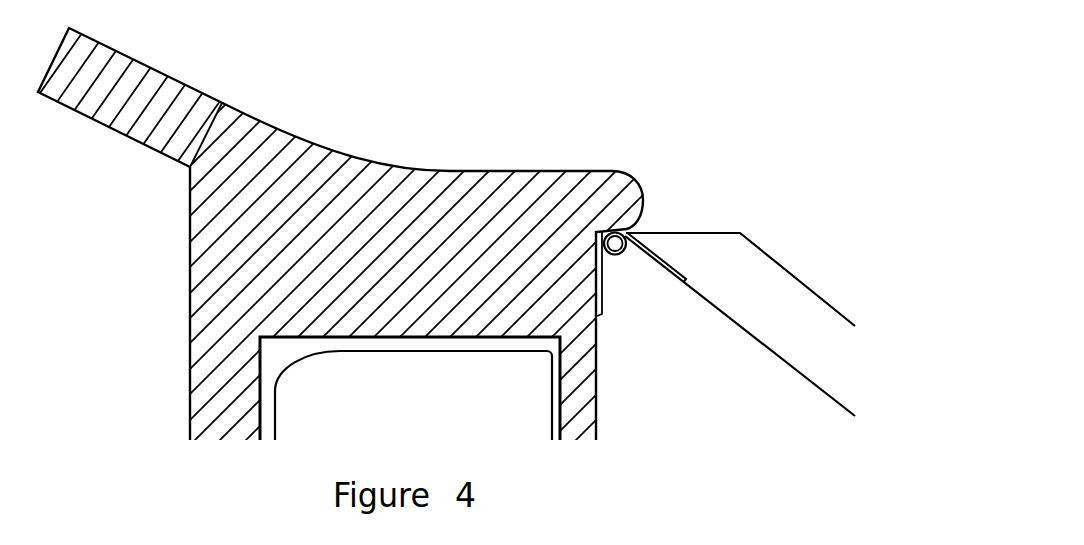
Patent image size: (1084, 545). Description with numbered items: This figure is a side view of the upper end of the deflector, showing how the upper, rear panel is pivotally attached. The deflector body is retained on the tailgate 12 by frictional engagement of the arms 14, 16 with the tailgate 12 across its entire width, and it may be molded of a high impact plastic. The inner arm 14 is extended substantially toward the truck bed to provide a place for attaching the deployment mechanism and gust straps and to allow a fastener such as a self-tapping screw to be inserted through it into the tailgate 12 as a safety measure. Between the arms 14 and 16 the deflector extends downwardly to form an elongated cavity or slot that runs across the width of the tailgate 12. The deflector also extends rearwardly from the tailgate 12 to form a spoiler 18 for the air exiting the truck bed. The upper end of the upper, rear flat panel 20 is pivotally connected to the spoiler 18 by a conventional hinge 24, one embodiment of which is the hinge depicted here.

The tailgate 12 is at (439, 413).
The inner arm 14 is at (597, 398).
The arm 16 is at (188, 311).
The spoiler 18 is at (292, 133).
The upper, rear flat panel 20 is at (757, 247).
The hinge 24 is at (640, 225).